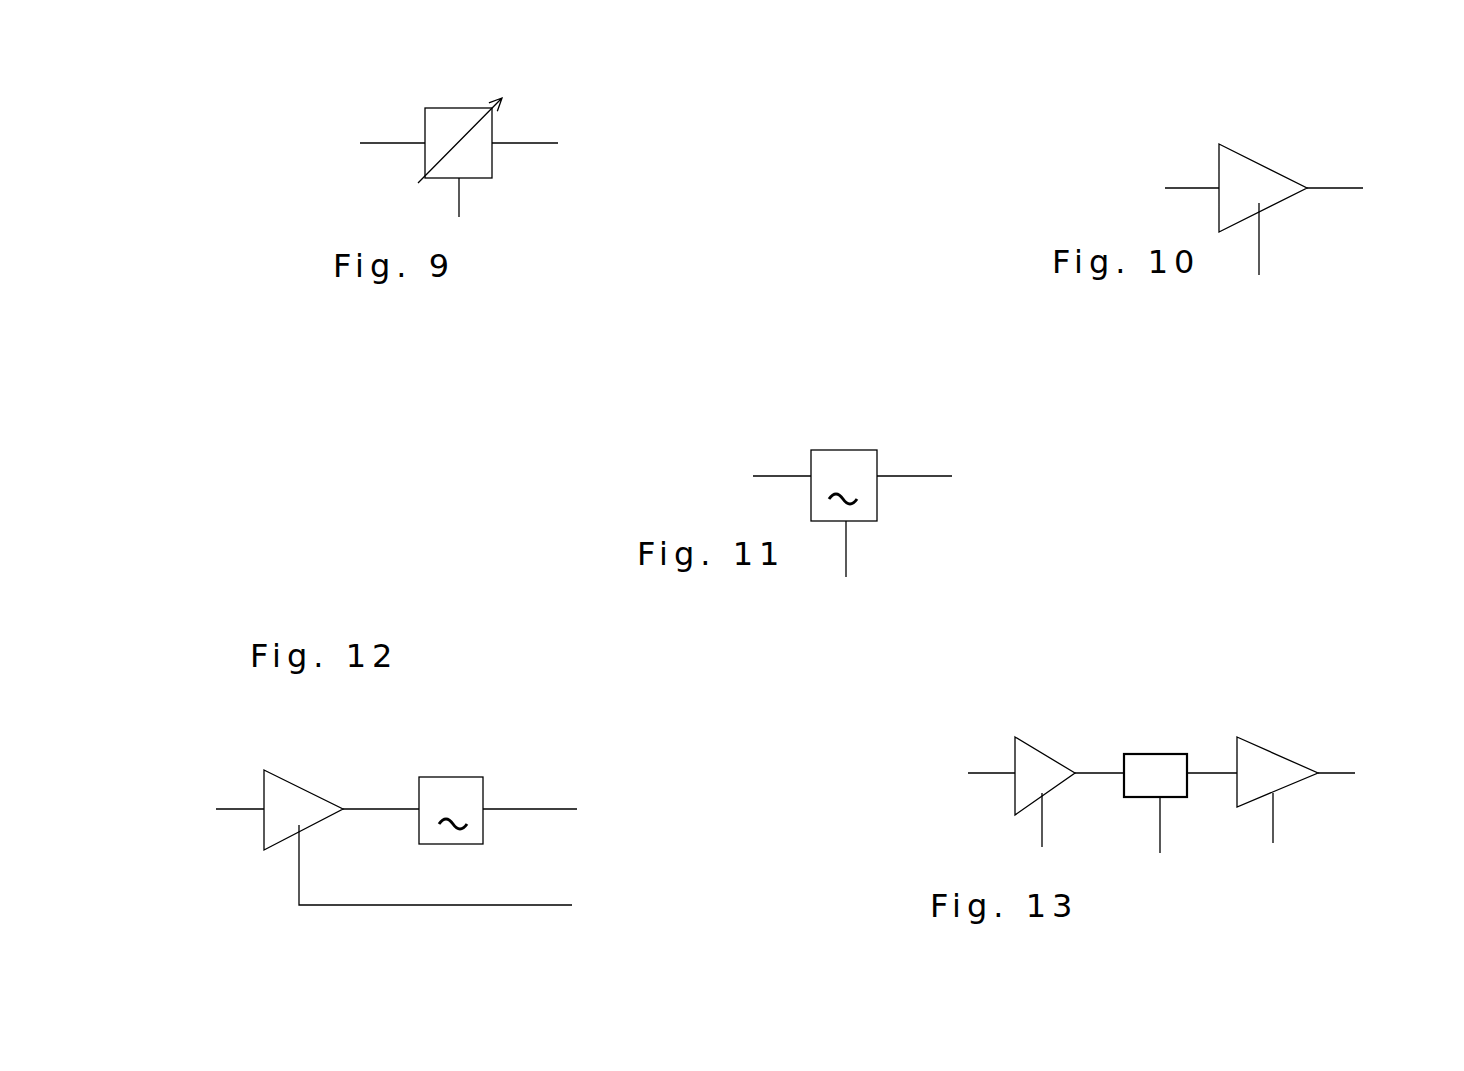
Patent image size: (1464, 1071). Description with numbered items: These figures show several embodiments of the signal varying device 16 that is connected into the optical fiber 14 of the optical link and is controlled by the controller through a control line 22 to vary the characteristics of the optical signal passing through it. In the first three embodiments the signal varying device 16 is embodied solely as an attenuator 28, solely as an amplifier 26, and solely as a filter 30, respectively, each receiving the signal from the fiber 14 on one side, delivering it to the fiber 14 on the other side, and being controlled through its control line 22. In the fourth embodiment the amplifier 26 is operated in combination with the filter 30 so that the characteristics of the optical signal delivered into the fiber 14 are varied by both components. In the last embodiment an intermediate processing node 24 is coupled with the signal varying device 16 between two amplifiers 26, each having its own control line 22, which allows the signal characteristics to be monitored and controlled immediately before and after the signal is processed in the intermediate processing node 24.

In FIG. 9, the optical fiber 14 is at (532, 140).
In FIG. 10, the optical fiber 14 is at (1185, 186).
In FIG. 11, the optical fiber 14 is at (932, 448).
In FIG. 12, the optical fiber 14 is at (538, 777).
In FIG. 13, the optical fiber 14 is at (1193, 842).
In FIG. 9, the signal varying device 16 is at (331, 184).
In FIG. 10, the signal varying device 16 is at (1296, 134).
In FIG. 11, the signal varying device 16 is at (767, 428).
In FIG. 12, the signal varying device 16 is at (476, 773).
In FIG. 13, the signal varying device 16 is at (1224, 721).
In FIG. 9, the control line 22 is at (459, 198).
In FIG. 10, the control line 22 is at (1259, 247).
In FIG. 11, the control line 22 is at (846, 552).
In FIG. 12, the control line 22 is at (299, 868).
In FIG. 13, the control line 22 is at (1307, 838).
In FIG. 13, the intermediate processing node 24 is at (1155, 752).
In FIG. 12, the amplifier 26 is at (308, 793).
In FIG. 13, the amplifier 26 is at (1278, 752).
In FIG. 9, the attenuator 28 is at (433, 107).
In FIG. 11, the filter 30 is at (846, 450).
In FIG. 12, the filter 30 is at (435, 775).